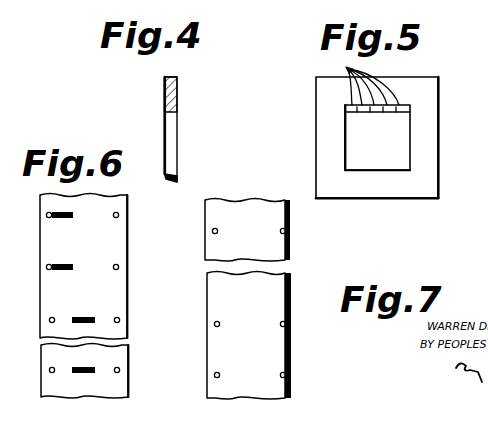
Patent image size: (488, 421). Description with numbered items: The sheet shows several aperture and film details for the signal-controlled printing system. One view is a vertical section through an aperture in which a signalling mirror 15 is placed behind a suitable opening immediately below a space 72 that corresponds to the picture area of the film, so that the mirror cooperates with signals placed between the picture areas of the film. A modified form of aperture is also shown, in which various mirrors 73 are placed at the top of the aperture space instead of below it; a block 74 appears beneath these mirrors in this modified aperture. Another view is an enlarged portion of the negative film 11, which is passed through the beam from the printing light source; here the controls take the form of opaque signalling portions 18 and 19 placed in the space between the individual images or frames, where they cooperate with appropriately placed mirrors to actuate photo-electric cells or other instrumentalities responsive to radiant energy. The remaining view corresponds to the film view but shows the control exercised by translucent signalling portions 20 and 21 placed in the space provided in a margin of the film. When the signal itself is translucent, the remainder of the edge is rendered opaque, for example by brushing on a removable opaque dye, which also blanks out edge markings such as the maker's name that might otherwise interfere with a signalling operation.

In FIG. 4, the space 72 is at (171, 130).
In FIG. 4, the signalling mirror 15 is at (173, 185).
In FIG. 5, the mirrors 73 is at (362, 84).
In FIG. 5, the block 74 is at (400, 136).
In FIG. 6, the negative film 11 is at (118, 230).
In FIG. 6, the signalling portion 18 is at (57, 212).
In FIG. 6, the signalling portion 19 is at (80, 318).
In FIG. 6, the translucent signalling portion 20 is at (290, 231).
In FIG. 6, the translucent signalling portion 21 is at (291, 357).